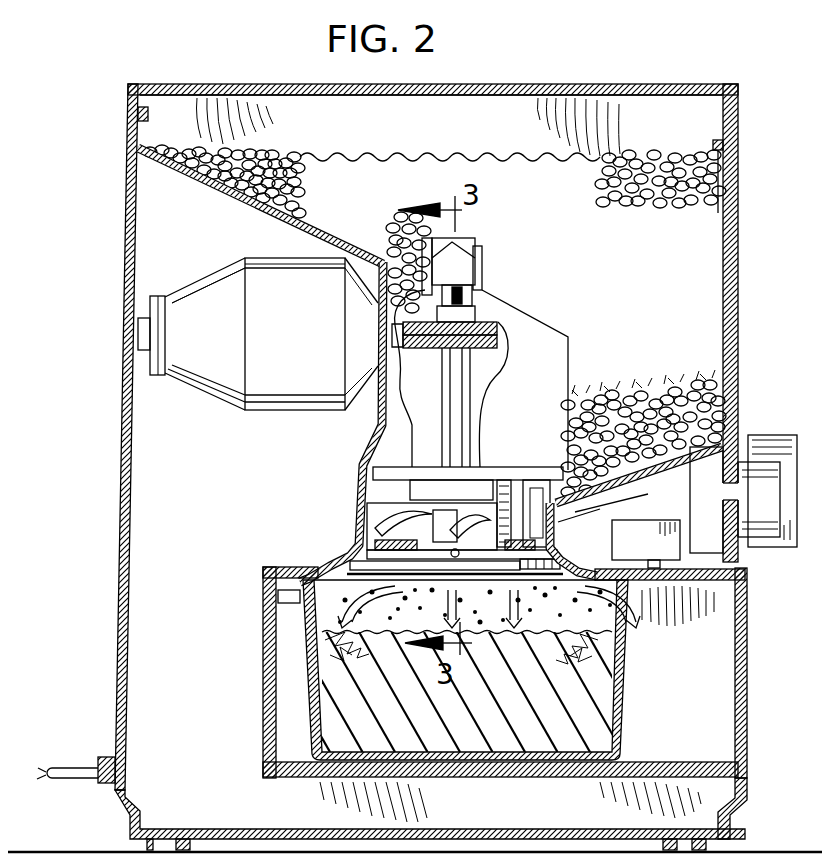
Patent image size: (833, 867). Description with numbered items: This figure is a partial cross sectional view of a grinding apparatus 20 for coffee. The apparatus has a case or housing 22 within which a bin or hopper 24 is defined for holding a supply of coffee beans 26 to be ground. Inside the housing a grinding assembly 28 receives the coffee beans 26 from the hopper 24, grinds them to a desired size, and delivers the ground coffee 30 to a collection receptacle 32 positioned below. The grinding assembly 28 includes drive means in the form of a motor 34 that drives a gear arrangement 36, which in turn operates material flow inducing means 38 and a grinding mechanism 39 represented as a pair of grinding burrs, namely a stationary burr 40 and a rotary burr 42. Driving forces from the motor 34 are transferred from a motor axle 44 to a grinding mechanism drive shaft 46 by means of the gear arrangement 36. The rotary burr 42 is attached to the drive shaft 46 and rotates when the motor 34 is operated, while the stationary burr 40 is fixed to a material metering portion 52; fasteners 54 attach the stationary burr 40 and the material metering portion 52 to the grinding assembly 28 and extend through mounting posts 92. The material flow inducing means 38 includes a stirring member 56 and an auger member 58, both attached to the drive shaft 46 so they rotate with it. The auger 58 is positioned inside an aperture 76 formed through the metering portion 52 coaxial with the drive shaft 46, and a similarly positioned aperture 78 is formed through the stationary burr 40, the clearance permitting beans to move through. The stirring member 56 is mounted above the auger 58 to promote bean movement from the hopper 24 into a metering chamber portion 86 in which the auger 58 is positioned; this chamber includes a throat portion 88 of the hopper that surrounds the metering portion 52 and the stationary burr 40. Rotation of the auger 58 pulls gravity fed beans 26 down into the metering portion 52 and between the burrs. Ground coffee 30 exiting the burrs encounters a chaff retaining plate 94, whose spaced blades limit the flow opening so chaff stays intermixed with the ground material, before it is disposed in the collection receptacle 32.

The grinding apparatus 20 is at (178, 75).
The housing 22 is at (742, 268).
The hopper 24 is at (698, 112).
The coffee beans 26 is at (652, 267).
The grinding assembly 28 is at (163, 254).
The ground coffee 30 is at (313, 622).
The collection receptacle 32 is at (747, 672).
The motor 34 is at (198, 375).
The gear arrangement 36 is at (482, 308).
The material flow inducing means 38 is at (346, 456).
The grinding mechanism 39 is at (718, 508).
The stationary burr 40 is at (560, 528).
The rotary burr 42 is at (545, 567).
The motor axle 44 is at (409, 378).
The drive shaft 46 is at (458, 368).
The material metering portion 52 is at (357, 533).
The fasteners 54 is at (510, 478).
The stirring member 56 is at (390, 472).
The auger member 58 is at (373, 497).
The aperture 76 is at (365, 518).
The aperture 78 is at (358, 546).
The metering chamber portion 86 is at (372, 487).
The throat portion 88 is at (555, 517).
The mounting posts 92 is at (522, 486).
The chaff retaining plate 94 is at (318, 562).